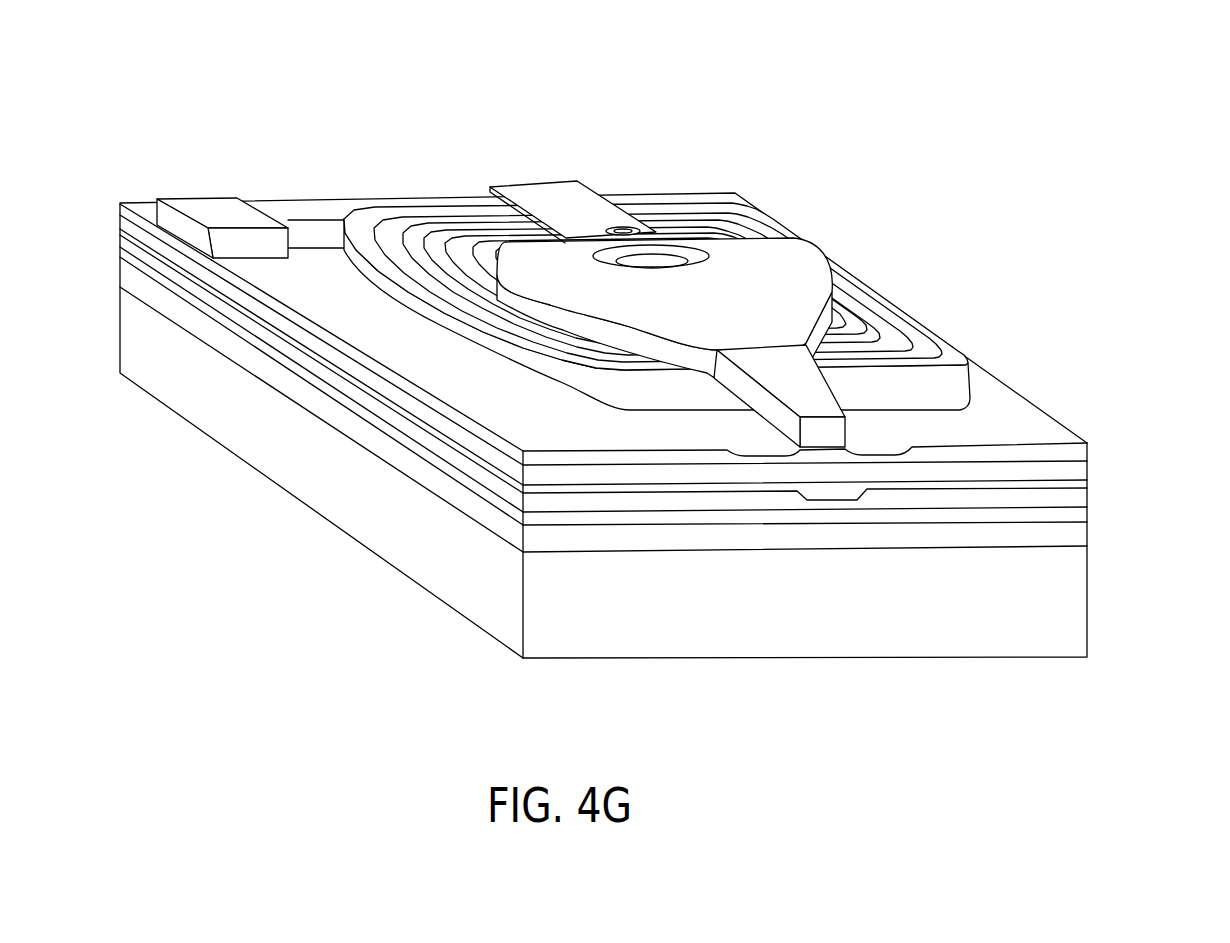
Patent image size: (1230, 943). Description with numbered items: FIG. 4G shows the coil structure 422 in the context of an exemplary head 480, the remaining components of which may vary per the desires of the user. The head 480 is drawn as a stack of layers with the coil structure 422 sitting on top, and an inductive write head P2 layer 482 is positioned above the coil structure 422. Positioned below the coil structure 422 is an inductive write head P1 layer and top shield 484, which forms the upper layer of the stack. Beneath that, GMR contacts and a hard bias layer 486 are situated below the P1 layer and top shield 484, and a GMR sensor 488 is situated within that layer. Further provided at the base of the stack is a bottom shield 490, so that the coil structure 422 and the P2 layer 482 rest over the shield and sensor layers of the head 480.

The coil structure 422 is at (403, 221).
The head 480 is at (664, 355).
The inductive write head P2 layer 482 is at (786, 280).
The inductive write head P1 layer & top shield 484 is at (1094, 470).
The GMR contacts and hard bias layer 486 is at (1094, 500).
The GMR sensor 488 is at (1094, 516).
The bottom shield 490 is at (1094, 540).